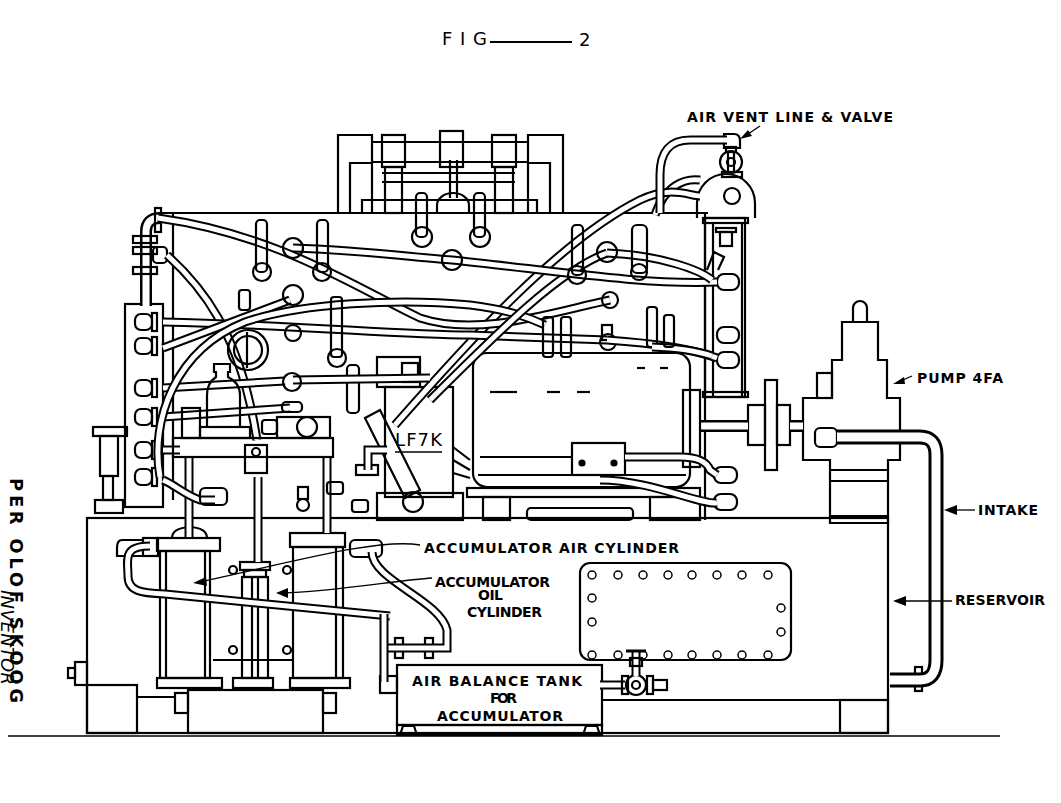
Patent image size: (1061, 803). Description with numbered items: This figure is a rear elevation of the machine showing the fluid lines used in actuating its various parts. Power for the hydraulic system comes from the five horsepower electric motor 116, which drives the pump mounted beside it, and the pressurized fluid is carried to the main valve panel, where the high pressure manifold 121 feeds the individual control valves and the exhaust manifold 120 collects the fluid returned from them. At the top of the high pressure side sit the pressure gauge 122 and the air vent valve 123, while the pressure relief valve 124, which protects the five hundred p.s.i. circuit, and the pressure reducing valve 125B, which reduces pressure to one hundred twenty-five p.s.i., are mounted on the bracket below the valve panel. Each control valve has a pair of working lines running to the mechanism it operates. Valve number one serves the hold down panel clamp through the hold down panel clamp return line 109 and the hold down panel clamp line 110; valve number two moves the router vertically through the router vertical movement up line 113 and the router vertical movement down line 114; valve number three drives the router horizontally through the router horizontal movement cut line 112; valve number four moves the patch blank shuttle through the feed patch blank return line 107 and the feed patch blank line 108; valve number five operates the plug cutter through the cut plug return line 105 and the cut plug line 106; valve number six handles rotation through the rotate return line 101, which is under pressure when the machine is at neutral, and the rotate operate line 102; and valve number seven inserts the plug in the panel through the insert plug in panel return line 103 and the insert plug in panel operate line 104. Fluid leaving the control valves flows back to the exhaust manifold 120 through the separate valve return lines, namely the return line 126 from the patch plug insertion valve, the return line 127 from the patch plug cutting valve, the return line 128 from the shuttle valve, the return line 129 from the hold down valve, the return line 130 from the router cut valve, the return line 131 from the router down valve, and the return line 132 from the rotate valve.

The rotate return line 101 is at (414, 230).
The rotate operate line 102 is at (488, 226).
The insert plug in panel return line 103 is at (257, 222).
The insert plug in panel operate line 104 is at (318, 232).
The cut plug return line 105 is at (580, 224).
The cut plug line 106 is at (634, 237).
The feed patch blank return line 107 is at (245, 296).
The feed patch blank line 108 is at (335, 300).
The hold down panel clamp return line 109 is at (602, 350).
The hold down panel clamp line 110 is at (660, 312).
The router horizontal movement cut line 112 is at (347, 378).
The router vertical movement up line 113 is at (540, 355).
The router vertical movement down line 114 is at (676, 318).
The electric motor 116 is at (578, 419).
The exhaust manifold main valve panel 120 is at (128, 347).
The high pressure manifold main valve panel 121 is at (752, 264).
The pressure gauge 122 is at (752, 205).
The air vent valve 123 is at (423, 323).
The pressure relief valve 124 is at (237, 423).
The pressure reducing valve 125B is at (270, 460).
The valve return line 126 is at (188, 318).
The valve return line 127 is at (143, 380).
The valve return line 128 is at (143, 395).
The valve return line 129 is at (294, 407).
The valve return line 130 is at (150, 438).
The valve return line 131 is at (150, 480).
The valve return line 132 is at (165, 213).